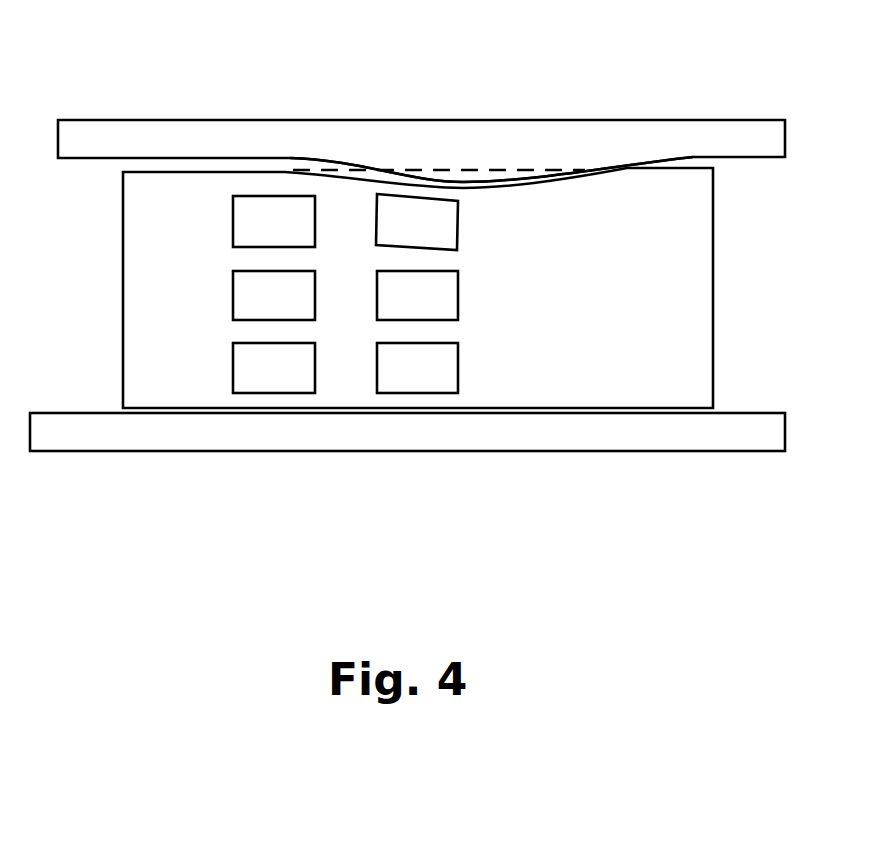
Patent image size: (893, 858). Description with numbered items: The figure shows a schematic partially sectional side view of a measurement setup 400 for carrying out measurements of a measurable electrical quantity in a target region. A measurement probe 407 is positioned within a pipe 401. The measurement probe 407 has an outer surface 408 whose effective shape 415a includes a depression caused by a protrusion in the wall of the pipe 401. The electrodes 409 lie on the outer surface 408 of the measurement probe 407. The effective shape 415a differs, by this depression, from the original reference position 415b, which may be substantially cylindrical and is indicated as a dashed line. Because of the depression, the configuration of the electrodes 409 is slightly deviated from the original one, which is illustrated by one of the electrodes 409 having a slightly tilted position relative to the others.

The measurement setup 400 is at (147, 514).
The pipe 401 is at (472, 463).
The measurement probe 407 is at (673, 330).
The outer surface 408 is at (645, 160).
The electrodes 409 is at (405, 360).
The effective shape 415a is at (358, 180).
The reference position 415b is at (473, 165).